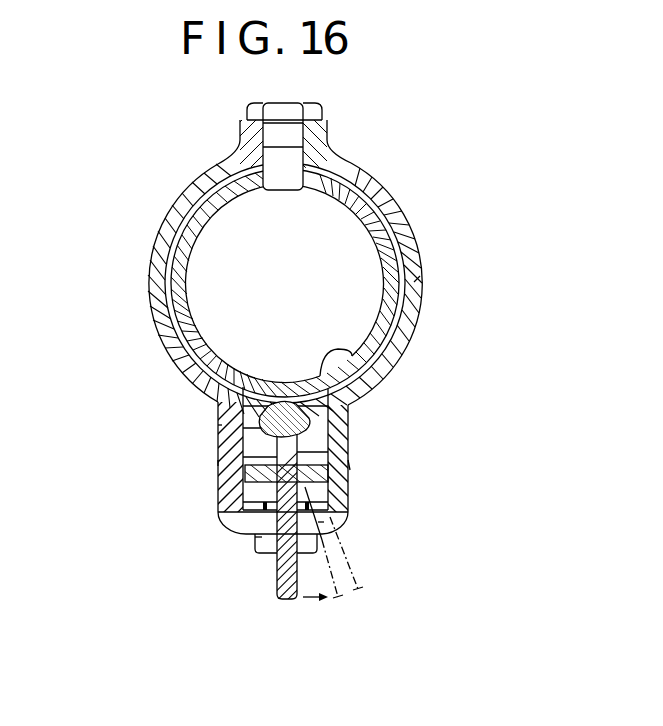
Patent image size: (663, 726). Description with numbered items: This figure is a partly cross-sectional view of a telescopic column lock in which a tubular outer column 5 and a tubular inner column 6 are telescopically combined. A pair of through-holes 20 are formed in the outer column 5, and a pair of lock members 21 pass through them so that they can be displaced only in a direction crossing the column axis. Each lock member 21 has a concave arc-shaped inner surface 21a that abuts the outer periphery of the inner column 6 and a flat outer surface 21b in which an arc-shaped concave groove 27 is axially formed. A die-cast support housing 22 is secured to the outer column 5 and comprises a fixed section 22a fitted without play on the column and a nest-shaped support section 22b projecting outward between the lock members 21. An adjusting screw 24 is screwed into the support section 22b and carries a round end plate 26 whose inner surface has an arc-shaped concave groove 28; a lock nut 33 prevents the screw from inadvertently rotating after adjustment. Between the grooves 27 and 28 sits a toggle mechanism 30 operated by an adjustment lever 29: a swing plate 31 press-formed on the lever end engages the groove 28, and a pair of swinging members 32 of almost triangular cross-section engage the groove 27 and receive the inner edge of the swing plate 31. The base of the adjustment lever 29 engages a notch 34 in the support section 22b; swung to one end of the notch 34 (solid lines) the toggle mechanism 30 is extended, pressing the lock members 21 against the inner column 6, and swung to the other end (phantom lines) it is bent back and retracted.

The outer column 5 is at (416, 239).
The inner column 6 is at (380, 223).
The through-holes 20 is at (218, 402).
The lock members 21 is at (350, 404).
The inner surfaces 21a is at (390, 366).
The outer surfaces 21b is at (220, 424).
The support housing 22 is at (391, 197).
The fixed section 22a is at (419, 277).
The support section 22b is at (350, 467).
The adjusting screw 24 is at (262, 549).
The end plate 26 is at (348, 521).
The concave groove 27 is at (336, 426).
The concave groove 28 is at (218, 460).
The adjustment lever 29 is at (360, 587).
The toggle mechanism 30 is at (203, 442).
The swing plate 31 is at (350, 462).
The swinging members 32 is at (335, 446).
The lock nut 33 is at (255, 537).
The notch 34 is at (322, 522).